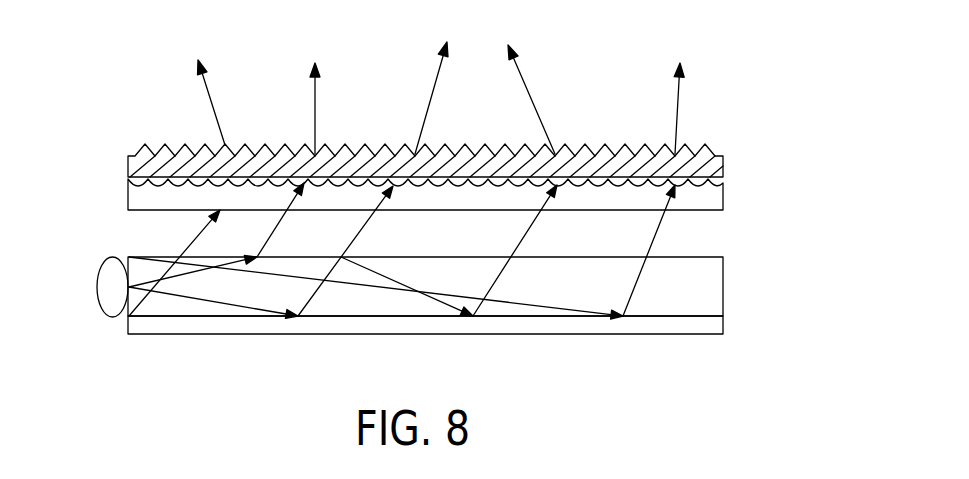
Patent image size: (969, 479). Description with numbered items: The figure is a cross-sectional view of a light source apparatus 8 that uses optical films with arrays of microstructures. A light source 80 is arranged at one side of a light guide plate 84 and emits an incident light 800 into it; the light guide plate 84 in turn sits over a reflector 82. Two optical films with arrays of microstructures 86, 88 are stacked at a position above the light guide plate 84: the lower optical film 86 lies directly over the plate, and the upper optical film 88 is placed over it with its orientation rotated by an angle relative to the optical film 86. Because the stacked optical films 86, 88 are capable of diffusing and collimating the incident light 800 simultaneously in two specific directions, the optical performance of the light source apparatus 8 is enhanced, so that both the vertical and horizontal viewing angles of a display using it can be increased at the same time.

The light source apparatus 8 is at (757, 128).
The light source 80 is at (110, 287).
The incident light 800 is at (158, 290).
The reflector 82 is at (715, 325).
The light guide plate 84 is at (712, 288).
The optical film with array of microstructures 86 is at (718, 202).
The optical film with array of microstructures 88 is at (718, 173).